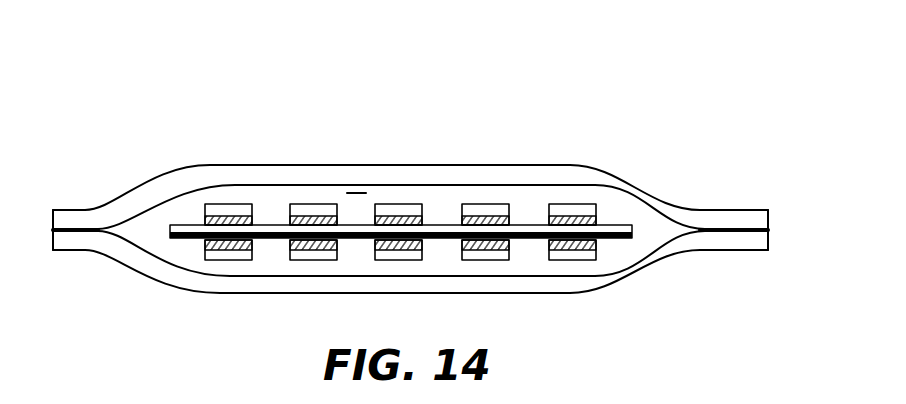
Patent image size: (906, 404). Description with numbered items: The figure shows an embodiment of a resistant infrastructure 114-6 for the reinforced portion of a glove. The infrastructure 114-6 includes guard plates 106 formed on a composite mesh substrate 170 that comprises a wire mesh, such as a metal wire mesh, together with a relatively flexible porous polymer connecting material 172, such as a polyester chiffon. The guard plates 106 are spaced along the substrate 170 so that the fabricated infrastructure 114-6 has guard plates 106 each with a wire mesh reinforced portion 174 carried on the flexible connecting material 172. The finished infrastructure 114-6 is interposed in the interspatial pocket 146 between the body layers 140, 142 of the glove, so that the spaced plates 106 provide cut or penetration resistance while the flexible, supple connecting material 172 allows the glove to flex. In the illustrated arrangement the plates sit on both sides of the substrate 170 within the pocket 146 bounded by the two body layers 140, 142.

The guard plates 106 is at (316, 204).
The resistant infrastructure 114-6 is at (524, 211).
The body layer 140 is at (380, 165).
The body layer 142 is at (195, 282).
The interspatial pocket 146 is at (359, 192).
The composite mesh substrate 170 is at (191, 212).
The flexible porous polymer connecting material 172 is at (170, 241).
The wire mesh reinforced portion 174 is at (275, 210).